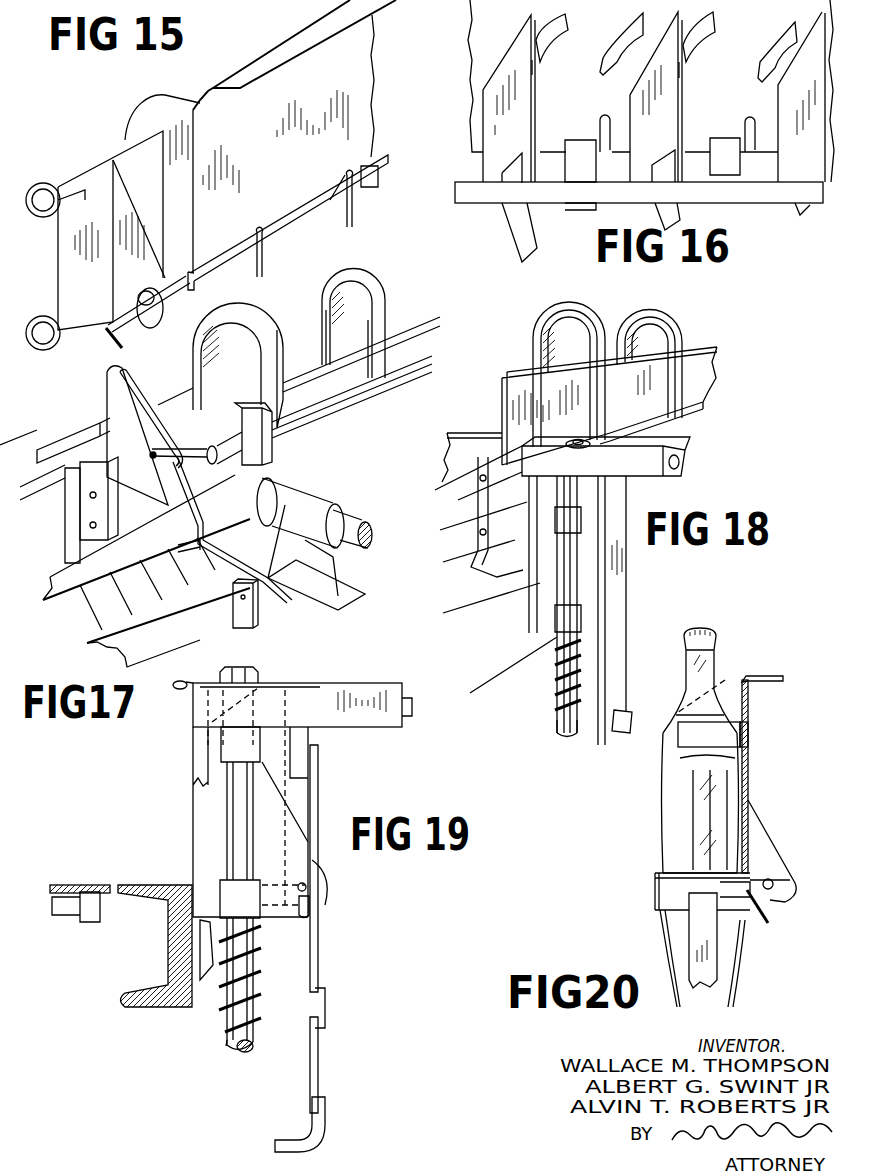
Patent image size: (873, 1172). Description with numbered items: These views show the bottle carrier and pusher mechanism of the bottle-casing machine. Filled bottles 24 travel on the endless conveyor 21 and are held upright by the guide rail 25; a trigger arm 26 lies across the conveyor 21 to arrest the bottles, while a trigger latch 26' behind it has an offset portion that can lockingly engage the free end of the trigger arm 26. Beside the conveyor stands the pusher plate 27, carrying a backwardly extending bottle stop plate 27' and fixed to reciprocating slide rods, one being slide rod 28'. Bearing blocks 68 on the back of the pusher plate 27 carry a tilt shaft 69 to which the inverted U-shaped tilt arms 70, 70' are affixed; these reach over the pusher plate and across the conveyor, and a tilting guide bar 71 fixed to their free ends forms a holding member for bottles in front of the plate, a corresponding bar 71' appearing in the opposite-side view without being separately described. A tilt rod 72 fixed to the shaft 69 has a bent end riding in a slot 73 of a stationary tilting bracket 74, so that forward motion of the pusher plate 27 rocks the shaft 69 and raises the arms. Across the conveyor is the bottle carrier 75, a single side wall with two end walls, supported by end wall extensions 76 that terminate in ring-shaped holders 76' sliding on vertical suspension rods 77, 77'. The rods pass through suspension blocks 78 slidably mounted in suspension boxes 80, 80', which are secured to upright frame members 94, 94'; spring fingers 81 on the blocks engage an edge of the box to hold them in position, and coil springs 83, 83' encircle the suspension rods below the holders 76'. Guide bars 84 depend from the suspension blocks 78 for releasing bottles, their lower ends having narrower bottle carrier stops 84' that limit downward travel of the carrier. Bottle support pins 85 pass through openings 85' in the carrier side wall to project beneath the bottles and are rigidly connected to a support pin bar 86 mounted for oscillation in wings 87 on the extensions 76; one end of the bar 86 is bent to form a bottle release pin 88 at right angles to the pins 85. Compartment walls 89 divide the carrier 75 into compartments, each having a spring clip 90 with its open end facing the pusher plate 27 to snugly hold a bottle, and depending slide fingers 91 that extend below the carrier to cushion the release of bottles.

In FIG. 15, the endless conveyor 21 is at (138, 600).
In FIG. 17, the endless conveyor 21 is at (60, 883).
In FIG. 20, the filled bottles 24 is at (682, 827).
In FIG. 18, the guide rail 25 is at (452, 563).
In FIG. 15, the trigger arm 26 is at (212, 583).
In FIG. 15, the trigger latch 26' is at (232, 530).
In FIG. 15, the pusher plate 27 is at (299, 361).
In FIG. 18, the pusher plate 27 is at (584, 406).
In FIG. 18, the bottle stop plate 27' is at (464, 461).
In FIG. 15, the slide rod 28' is at (335, 544).
In FIG. 15, the bearing block 68 is at (275, 455).
In FIG. 15, the tilt shaft 69 is at (338, 405).
In FIG. 15, the tilt arm 70 is at (247, 361).
In FIG. 18, the tilt arm 70 is at (668, 356).
In FIG. 15, the tilt arm 70' is at (376, 319).
In FIG. 18, the tilt arm 70' is at (584, 355).
In FIG. 15, the tilting guide bar 71 is at (197, 424).
In FIG. 18, the shaft 71' is at (651, 423).
In FIG. 15, the tilt rod 72 is at (152, 455).
In FIG. 15, the slot 73 is at (137, 388).
In FIG. 15, the tilting bracket 74 is at (115, 408).
In FIG. 15, the bottle carrier 75 is at (363, 70).
In FIG. 16, the bottle carrier 75 is at (478, 80).
In FIG. 20, the bottle carrier 75 is at (750, 700).
In FIG. 15, the end wall extension 76 is at (110, 212).
In FIG. 17, the end wall extension 76 is at (203, 910).
In FIG. 15, the ring-shaped holder 76' is at (43, 266).
In FIG. 19, the ring-shaped holder 76' is at (529, 606).
In FIG. 17, the suspension rod 77 is at (207, 1056).
In FIG. 19, the suspension rod 77' is at (531, 714).
In FIG. 17, the suspension block 78 is at (302, 737).
In FIG. 15, the suspension box 80 is at (69, 498).
In FIG. 17, the suspension box 80 is at (302, 786).
In FIG. 18, the suspension box 80' is at (627, 456).
In FIG. 15, the spring finger 81 is at (55, 430).
In FIG. 17, the spring finger 81 is at (182, 680).
In FIG. 17, the coil spring 83 is at (258, 985).
In FIG. 19, the coil spring 83' is at (537, 675).
In FIG. 19, the guide bar 84 is at (565, 610).
In FIG. 17, the guide bar 84 is at (337, 929).
In FIG. 19, the bottle carrier stop 84' is at (638, 716).
In FIG. 17, the bottle carrier stop 84' is at (332, 1120).
In FIG. 15, the bottle support pin 85 is at (324, 226).
In FIG. 16, the bottle support pin 85 is at (585, 153).
In FIG. 20, the bottle support pin 85 is at (724, 906).
In FIG. 15, the opening 85' is at (321, 206).
In FIG. 16, the opening 85' is at (731, 136).
In FIG. 15, the support pin bar 86 is at (272, 220).
In FIG. 20, the support pin bar 86 is at (775, 887).
In FIG. 15, the wing 87 is at (137, 215).
In FIG. 17, the wing 87 is at (330, 882).
In FIG. 20, the wing 87 is at (778, 835).
In FIG. 15, the bottle release pin 88 is at (107, 347).
In FIG. 17, the bottle release pin 88 is at (312, 903).
In FIG. 16, the compartment wall 89 is at (527, 117).
In FIG. 20, the compartment wall 89 is at (725, 680).
In FIG. 16, the spring clip 90 is at (566, 24).
In FIG. 20, the spring clip 90 is at (680, 740).
In FIG. 16, the slide finger 91 is at (668, 176).
In FIG. 20, the slide finger 91 is at (740, 990).
In FIG. 15, the upright frame member 94 is at (54, 515).
In FIG. 17, the upright frame member 94 is at (185, 756).
In FIG. 19, the upright frame member 94' is at (506, 533).